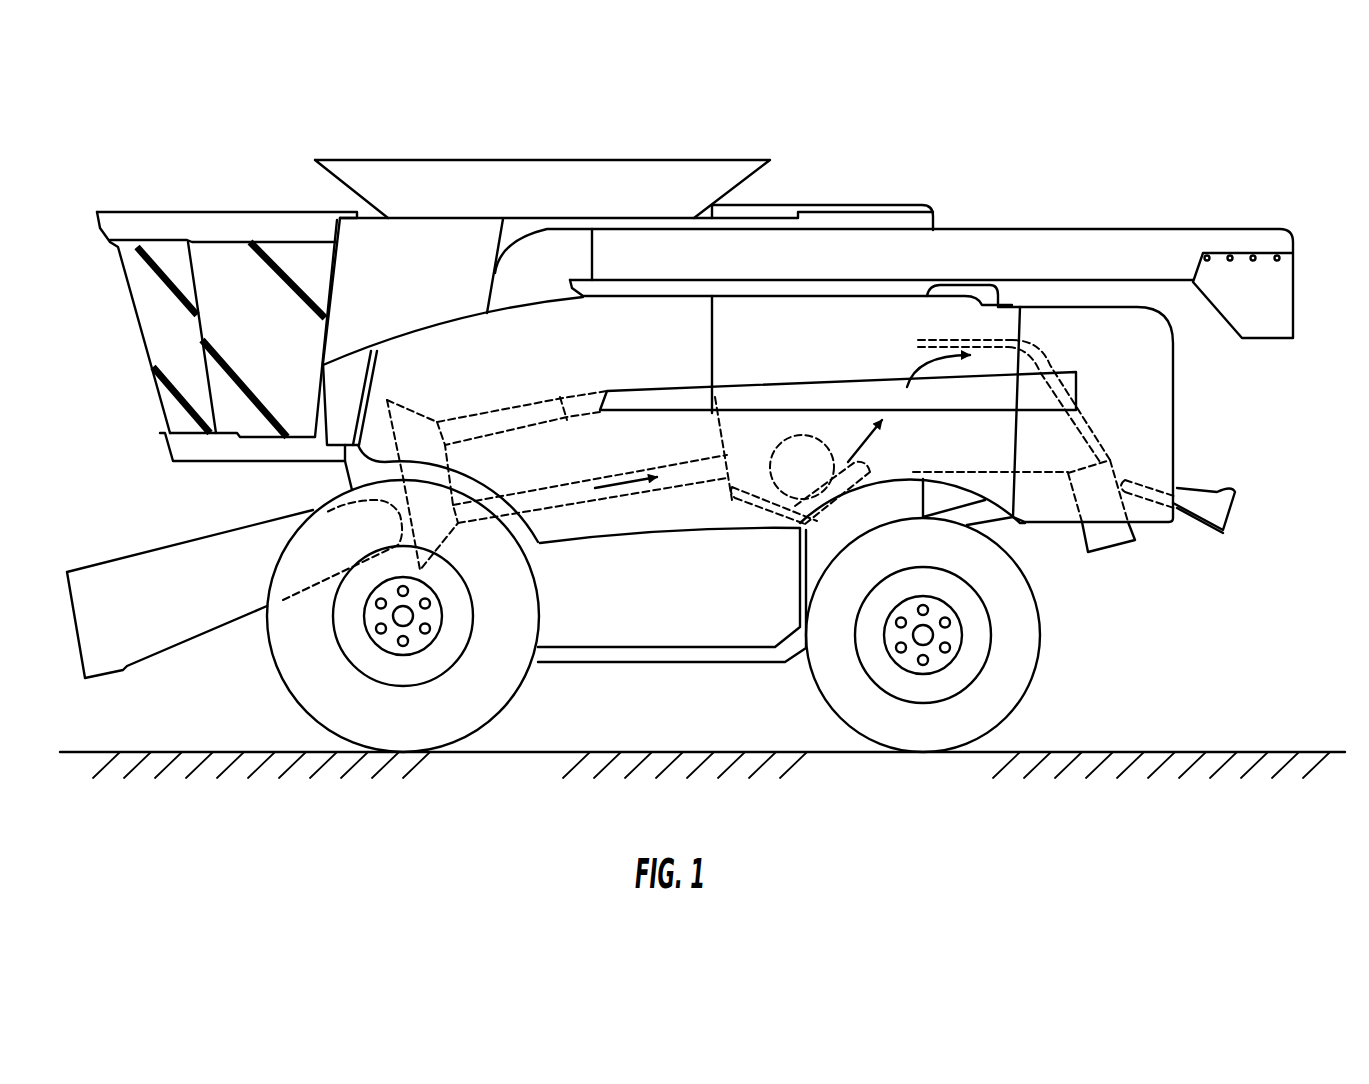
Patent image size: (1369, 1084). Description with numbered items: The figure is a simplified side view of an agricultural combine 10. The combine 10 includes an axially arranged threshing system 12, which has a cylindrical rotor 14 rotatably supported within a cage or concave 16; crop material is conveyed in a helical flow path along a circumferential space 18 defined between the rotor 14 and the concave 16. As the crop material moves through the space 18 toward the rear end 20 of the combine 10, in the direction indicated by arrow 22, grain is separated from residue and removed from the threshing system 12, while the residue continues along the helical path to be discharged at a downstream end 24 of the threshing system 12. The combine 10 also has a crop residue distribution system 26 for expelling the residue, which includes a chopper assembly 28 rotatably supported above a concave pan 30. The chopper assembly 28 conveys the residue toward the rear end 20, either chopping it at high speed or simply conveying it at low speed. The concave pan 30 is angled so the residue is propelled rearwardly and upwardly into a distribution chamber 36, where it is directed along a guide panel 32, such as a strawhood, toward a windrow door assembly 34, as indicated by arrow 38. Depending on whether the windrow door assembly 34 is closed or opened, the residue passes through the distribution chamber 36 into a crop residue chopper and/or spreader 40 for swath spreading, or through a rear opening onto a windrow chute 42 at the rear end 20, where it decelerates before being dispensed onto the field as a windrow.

The agricultural combine 10 is at (1077, 190).
The threshing system 12 is at (500, 410).
The cylindrical rotor 14 is at (560, 397).
The concave 16 is at (608, 498).
The circumferential space 18 is at (563, 495).
The rear end 20 is at (1173, 420).
The arrow 22 is at (627, 482).
The downstream end 24 is at (723, 422).
The crop residue distribution system 26 is at (893, 363).
The chopper assembly 28 is at (772, 498).
The concave pan 30 is at (743, 502).
The guide panel 32 is at (958, 340).
The windrow door assembly 34 is at (1043, 356).
The distribution chamber 36 is at (1000, 444).
The arrow 38 is at (922, 373).
The crop residue chopper and/or spreader 40 is at (1115, 548).
The windrow chute 42 is at (1203, 527).